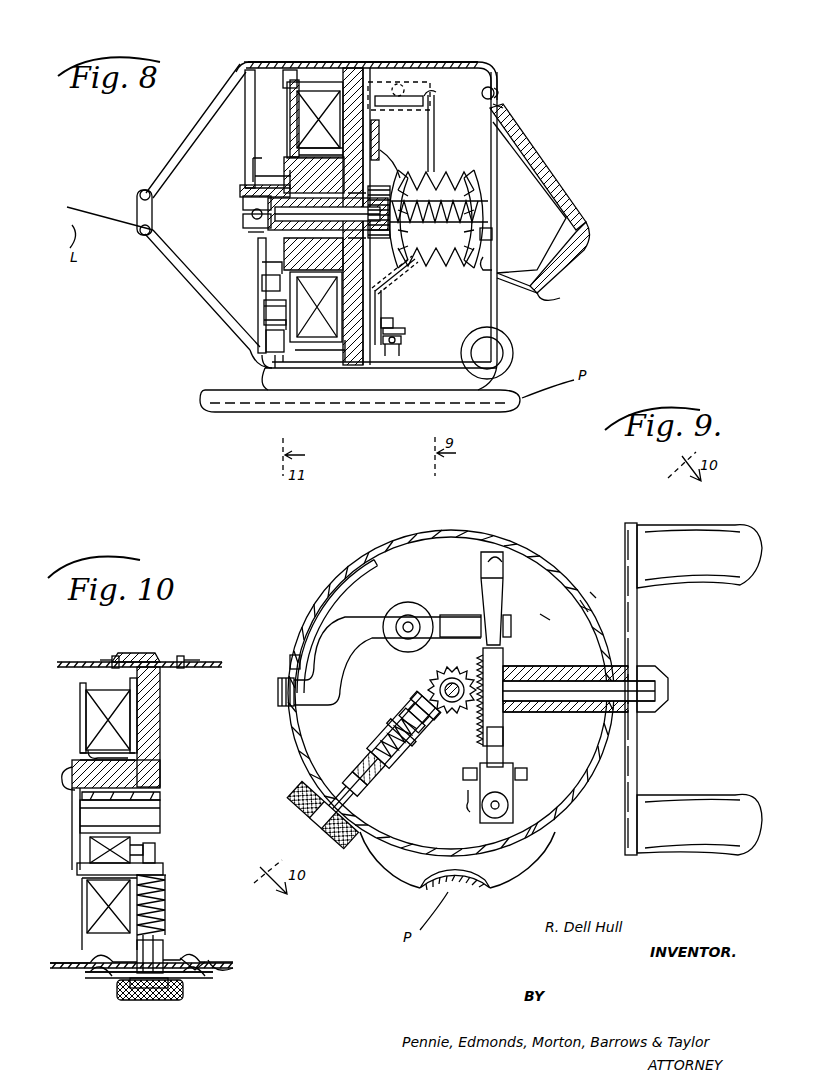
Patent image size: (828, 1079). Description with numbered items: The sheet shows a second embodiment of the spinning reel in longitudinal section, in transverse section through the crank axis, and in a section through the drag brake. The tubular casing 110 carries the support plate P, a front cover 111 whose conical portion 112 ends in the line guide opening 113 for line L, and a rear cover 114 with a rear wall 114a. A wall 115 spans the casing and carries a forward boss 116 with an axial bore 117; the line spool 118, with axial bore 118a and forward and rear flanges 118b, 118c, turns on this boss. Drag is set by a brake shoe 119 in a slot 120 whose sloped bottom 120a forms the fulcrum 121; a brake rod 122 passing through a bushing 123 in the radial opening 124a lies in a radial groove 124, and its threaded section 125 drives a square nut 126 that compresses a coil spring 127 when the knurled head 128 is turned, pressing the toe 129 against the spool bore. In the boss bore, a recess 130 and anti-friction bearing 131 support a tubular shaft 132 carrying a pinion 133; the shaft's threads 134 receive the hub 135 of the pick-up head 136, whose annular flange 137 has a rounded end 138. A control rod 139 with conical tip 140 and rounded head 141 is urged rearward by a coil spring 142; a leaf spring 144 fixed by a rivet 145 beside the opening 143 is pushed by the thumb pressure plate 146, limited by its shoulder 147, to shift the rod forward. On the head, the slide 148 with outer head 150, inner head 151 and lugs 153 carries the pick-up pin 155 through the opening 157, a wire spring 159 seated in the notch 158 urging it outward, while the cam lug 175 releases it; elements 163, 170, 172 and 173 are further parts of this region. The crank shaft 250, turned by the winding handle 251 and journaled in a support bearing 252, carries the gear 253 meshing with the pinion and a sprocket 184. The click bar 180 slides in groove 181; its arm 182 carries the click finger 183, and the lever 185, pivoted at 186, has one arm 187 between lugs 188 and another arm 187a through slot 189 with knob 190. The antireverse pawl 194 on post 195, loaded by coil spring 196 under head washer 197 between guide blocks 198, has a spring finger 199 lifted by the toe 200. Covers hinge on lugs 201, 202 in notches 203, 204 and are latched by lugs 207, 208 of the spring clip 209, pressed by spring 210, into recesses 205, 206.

In FIG. 9, the casing 110 is at (405, 536).
In FIG. 10, the casing 110 is at (140, 653).
In FIG. 8, the front cover 111 is at (262, 62).
In FIG. 10, the front cover 111 is at (62, 660).
In FIG. 8, the conical portion 112 is at (240, 76).
In FIG. 8, the line guide opening 113 is at (141, 192).
In FIG. 8, the rear cover 114 is at (452, 62).
In FIG. 9, the rear cover 114 is at (584, 606).
In FIG. 10, the rear cover 114 is at (212, 662).
In FIG. 8, the rear wall 114a is at (497, 85).
In FIG. 8, the wall 115 is at (355, 75).
In FIG. 9, the wall 115 is at (442, 540).
In FIG. 10, the wall 115 is at (160, 712).
In FIG. 8, the boss 116 is at (300, 152).
In FIG. 10, the boss 116 is at (86, 753).
In FIG. 8, the axial bore 117 is at (300, 172).
In FIG. 8, the line spool 118 is at (300, 120).
In FIG. 10, the line spool 118 is at (125, 735).
In FIG. 8, the axial bore 118a is at (296, 130).
In FIG. 10, the axial bore 118a is at (98, 755).
In FIG. 8, the forward flange 118b is at (258, 70).
In FIG. 10, the forward flange 118b is at (80, 690).
In FIG. 8, the rear flange 118c is at (328, 68).
In FIG. 10, the rear flange 118c is at (137, 682).
In FIG. 9, the brake shoe 119 is at (412, 720).
In FIG. 10, the brake shoe 119 is at (166, 872).
In FIG. 9, the slot 120 is at (403, 730).
In FIG. 10, the slot 120 is at (165, 858).
In FIG. 10, the sloped bottom 120a is at (90, 858).
In FIG. 9, the fulcrum 121 is at (425, 705).
In FIG. 10, the fulcrum 121 is at (120, 816).
In FIG. 9, the brake rod 122 is at (419, 713).
In FIG. 10, the brake rod 122 is at (160, 840).
In FIG. 9, the bushing 123 is at (354, 784).
In FIG. 10, the bushing 123 is at (165, 945).
In FIG. 9, the radial groove 124 is at (355, 783).
In FIG. 10, the radial groove 124 is at (160, 932).
In FIG. 9, the radial opening 124a is at (341, 799).
In FIG. 10, the radial opening 124a is at (170, 962).
In FIG. 9, the threaded section 125 is at (401, 732).
In FIG. 10, the threaded section 125 is at (166, 905).
In FIG. 9, the square nut 126 is at (368, 768).
In FIG. 10, the square nut 126 is at (166, 920).
In FIG. 9, the coil spring 127 is at (395, 738).
In FIG. 10, the coil spring 127 is at (166, 882).
In FIG. 9, the knurled head 128 is at (322, 814).
In FIG. 10, the knurled head 128 is at (158, 1000).
In FIG. 10, the toe 129 is at (77, 868).
In FIG. 8, the annular recess 130 is at (255, 165).
In FIG. 10, the annular recess 130 is at (72, 800).
In FIG. 8, the anti-friction bearing 131 is at (360, 190).
In FIG. 10, the anti-friction bearing 131 is at (160, 772).
In FIG. 8, the tubular shaft 132 is at (380, 200).
In FIG. 8, the pinion 133 is at (392, 232).
In FIG. 9, the pinion 133 is at (440, 682).
In FIG. 8, the threads 134 is at (255, 180).
In FIG. 8, the hub 135 is at (242, 190).
In FIG. 8, the pick-up head 136 is at (228, 82).
In FIG. 8, the annular flange 137 is at (240, 64).
In FIG. 8, the rounded end 138 is at (295, 68).
In FIG. 8, the control rod 139 is at (252, 235).
In FIG. 9, the control rod 139 is at (452, 668).
In FIG. 8, the conical tip 140 is at (243, 220).
In FIG. 8, the rounded head 141 is at (535, 160).
In FIG. 8, the coil spring 142 is at (490, 213).
In FIG. 8, the opening 143 is at (505, 108).
In FIG. 8, the leaf spring 144 is at (548, 178).
In FIG. 8, the rivet 145 is at (497, 90).
In FIG. 8, the thumb pressure plate 146 is at (578, 214).
In FIG. 8, the shoulder 147 is at (562, 296).
In FIG. 8, the slide 148 is at (270, 300).
In FIG. 8, the outer head 150 is at (266, 340).
In FIG. 8, the inner head 151 is at (514, 350).
In FIG. 8, the lugs 153 is at (262, 283).
In FIG. 8, the pick-up pin 155 is at (275, 362).
In FIG. 8, the opening 157 is at (262, 362).
In FIG. 8, the transverse notch 158 is at (264, 322).
In FIG. 8, the wire spring 159 is at (264, 310).
In FIG. 8, the lower bracket 163 is at (300, 355).
In FIG. 8, the partition wall 170 is at (262, 250).
In FIG. 8, the nut 172 is at (243, 228).
In FIG. 8, the lock nut 173 is at (243, 203).
In FIG. 10, the cam lug 175 is at (64, 780).
In FIG. 8, the flat bar 180 is at (385, 85).
In FIG. 8, the groove 181 is at (398, 84).
In FIG. 9, the groove 181 is at (500, 566).
In FIG. 8, the arm 182 is at (420, 96).
In FIG. 8, the click finger 183 is at (436, 120).
In FIG. 9, the click finger 183 is at (506, 602).
In FIG. 8, the sprocket 184 is at (435, 185).
In FIG. 9, the sprocket 184 is at (504, 660).
In FIG. 9, the lever 185 is at (396, 606).
In FIG. 9, the pivot 186 is at (409, 620).
In FIG. 8, the arm 187 is at (392, 165).
In FIG. 9, the arm 187 is at (478, 625).
In FIG. 9, the arm 187a is at (322, 655).
In FIG. 8, the lugs 188 is at (380, 150).
In FIG. 9, the slot 189 is at (290, 663).
In FIG. 9, the knob 190 is at (278, 692).
In FIG. 8, the spring pawl 194 is at (390, 328).
In FIG. 9, the spring pawl 194 is at (468, 796).
In FIG. 8, the post 195 is at (402, 338).
In FIG. 9, the post 195 is at (508, 808).
In FIG. 8, the coil spring 196 is at (392, 347).
In FIG. 8, the head washer 197 is at (406, 325).
In FIG. 9, the head washer 197 is at (510, 798).
In FIG. 8, the guide blocks 198 is at (384, 292).
In FIG. 9, the guide blocks 198 is at (528, 775).
In FIG. 8, the spring finger 199 is at (417, 270).
In FIG. 9, the spring finger 199 is at (502, 745).
In FIG. 8, the toe 200 is at (313, 290).
In FIG. 10, the lug 201 is at (115, 656).
In FIG. 9, the lug 202 is at (545, 617).
In FIG. 10, the lug 202 is at (180, 656).
In FIG. 10, the notch 203 is at (103, 660).
In FIG. 9, the notch 204 is at (593, 595).
In FIG. 10, the notch 204 is at (192, 660).
In FIG. 10, the recess 205 is at (88, 962).
In FIG. 10, the recess 206 is at (230, 962).
In FIG. 10, the lug 207 is at (98, 980).
In FIG. 10, the lug 208 is at (198, 980).
In FIG. 10, the spring clip 209 is at (120, 985).
In FIG. 10, the spring 210 is at (145, 990).
In FIG. 9, the crank shaft 250 is at (560, 668).
In FIG. 9, the winding handle 251 is at (639, 612).
In FIG. 9, the support bearing 252 is at (582, 712).
In FIG. 8, the gear 253 is at (492, 238).
In FIG. 9, the gear 253 is at (466, 615).